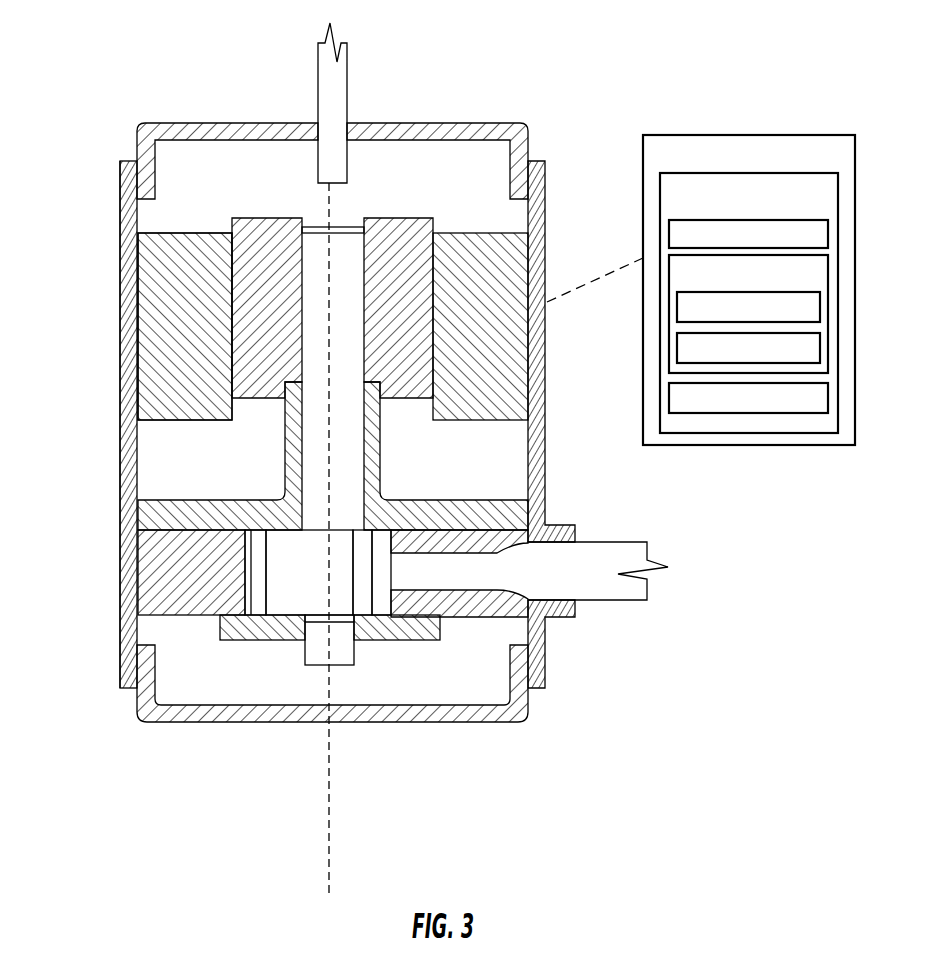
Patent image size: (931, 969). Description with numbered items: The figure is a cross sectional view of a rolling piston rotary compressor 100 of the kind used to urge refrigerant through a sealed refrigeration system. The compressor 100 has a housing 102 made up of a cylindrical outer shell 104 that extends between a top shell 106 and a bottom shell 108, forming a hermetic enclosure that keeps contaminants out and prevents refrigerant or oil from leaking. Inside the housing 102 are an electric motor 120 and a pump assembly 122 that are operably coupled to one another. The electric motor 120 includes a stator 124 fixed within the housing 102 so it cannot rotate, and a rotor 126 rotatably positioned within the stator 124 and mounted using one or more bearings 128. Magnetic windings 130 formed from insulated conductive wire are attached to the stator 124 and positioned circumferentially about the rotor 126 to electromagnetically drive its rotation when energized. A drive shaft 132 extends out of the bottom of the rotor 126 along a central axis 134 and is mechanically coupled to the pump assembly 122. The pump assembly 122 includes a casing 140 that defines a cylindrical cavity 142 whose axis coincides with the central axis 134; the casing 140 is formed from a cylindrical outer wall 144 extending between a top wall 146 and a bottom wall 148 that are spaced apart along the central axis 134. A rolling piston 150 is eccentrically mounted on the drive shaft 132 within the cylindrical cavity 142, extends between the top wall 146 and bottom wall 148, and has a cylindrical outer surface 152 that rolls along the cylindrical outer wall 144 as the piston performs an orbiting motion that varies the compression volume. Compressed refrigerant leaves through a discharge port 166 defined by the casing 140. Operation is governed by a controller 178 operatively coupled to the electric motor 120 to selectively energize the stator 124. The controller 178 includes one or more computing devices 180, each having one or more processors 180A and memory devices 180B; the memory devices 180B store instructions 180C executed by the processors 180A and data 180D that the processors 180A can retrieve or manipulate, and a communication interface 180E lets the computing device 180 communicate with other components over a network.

The compressor 100 is at (95, 80).
The housing 102 is at (118, 208).
The cylindrical outer shell 104 is at (120, 292).
The top shell 106 is at (483, 128).
The bottom shell 108 is at (163, 722).
The electric motor 120 is at (399, 208).
The pump assembly 122 is at (165, 637).
The stator 124 is at (160, 380).
The rotor 126 is at (250, 332).
The bearing 128 is at (285, 447).
The magnetic winding 130 is at (160, 266).
The drive shaft 132 is at (343, 438).
The central axis 134 is at (331, 832).
The casing 140 is at (248, 646).
The cylindrical cavity 142 is at (382, 598).
The cylindrical outer wall 144 is at (241, 573).
The top wall 146 is at (368, 521).
The bottom wall 148 is at (281, 625).
The rolling piston 150 is at (275, 578).
The cylindrical outer surface 152 is at (375, 565).
The discharge port 166 is at (394, 563).
The controller 178 is at (731, 168).
The computing device 180 is at (731, 211).
The processor 180A is at (726, 247).
The memory device 180B is at (726, 290).
The instructions 180C is at (726, 320).
The data 180D is at (726, 361).
The communication interface 180E is at (726, 411).